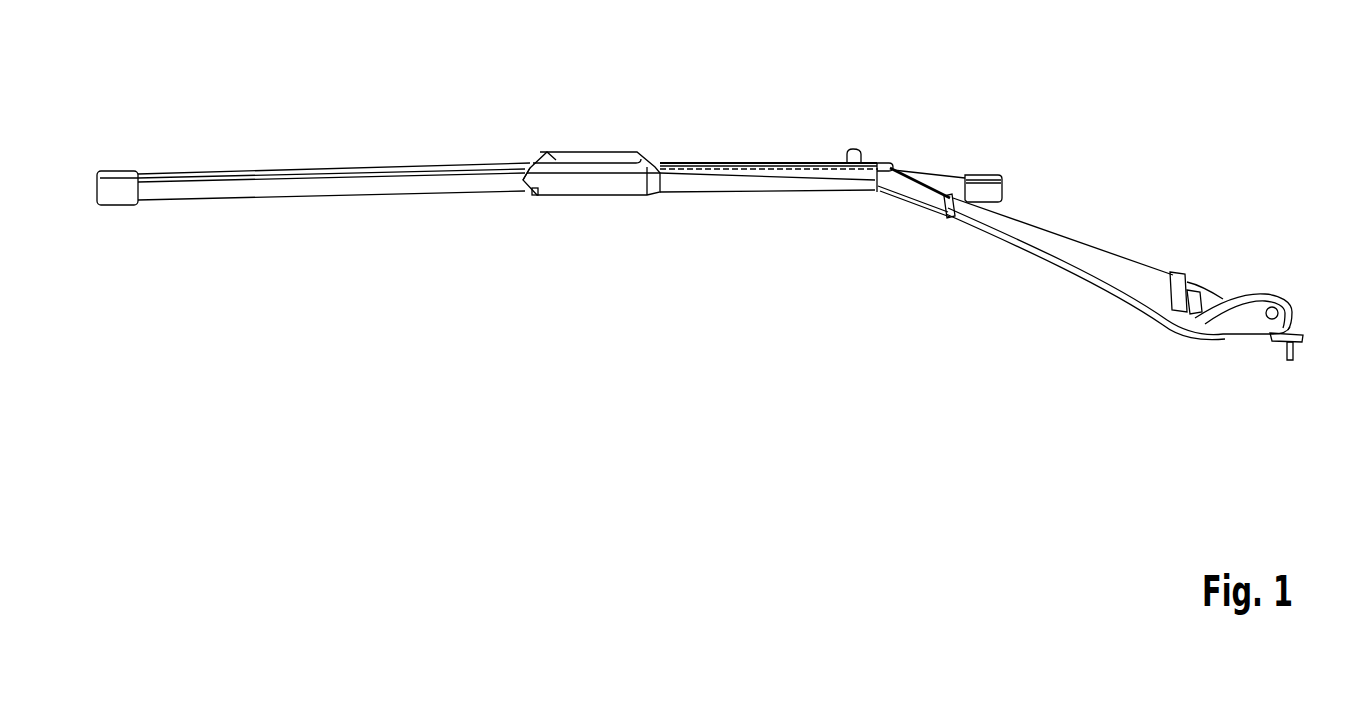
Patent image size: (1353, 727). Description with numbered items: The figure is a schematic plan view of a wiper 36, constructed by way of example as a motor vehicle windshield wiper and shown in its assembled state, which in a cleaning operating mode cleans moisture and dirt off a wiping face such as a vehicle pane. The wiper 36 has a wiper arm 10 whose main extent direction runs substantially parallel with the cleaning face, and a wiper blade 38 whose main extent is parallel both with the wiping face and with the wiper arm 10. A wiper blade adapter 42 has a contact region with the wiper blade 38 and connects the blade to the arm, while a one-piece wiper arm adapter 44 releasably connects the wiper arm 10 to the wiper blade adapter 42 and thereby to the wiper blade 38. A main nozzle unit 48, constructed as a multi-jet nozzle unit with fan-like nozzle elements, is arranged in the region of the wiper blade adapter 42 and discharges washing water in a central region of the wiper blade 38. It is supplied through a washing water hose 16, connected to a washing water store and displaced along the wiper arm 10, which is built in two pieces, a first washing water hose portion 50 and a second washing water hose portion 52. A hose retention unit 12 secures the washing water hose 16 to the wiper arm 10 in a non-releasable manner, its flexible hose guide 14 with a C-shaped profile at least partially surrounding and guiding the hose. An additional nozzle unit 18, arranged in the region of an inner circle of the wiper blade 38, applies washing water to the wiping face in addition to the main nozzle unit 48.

The wiper arm 10 is at (1016, 176).
The hose retention unit 12 is at (750, 190).
The hose guide 14 is at (731, 163).
The washing water hose 16 is at (890, 157).
The additional nozzle unit 18 is at (862, 145).
The wiper 36 is at (813, 84).
The wiper blade 38 is at (397, 162).
The wiper blade adapter 42 is at (533, 196).
The wiper arm adapter 44 is at (546, 152).
The main nozzle unit 48 is at (578, 144).
The first washing water hose portion 50 is at (895, 165).
The second washing water hose portion 52 is at (787, 167).